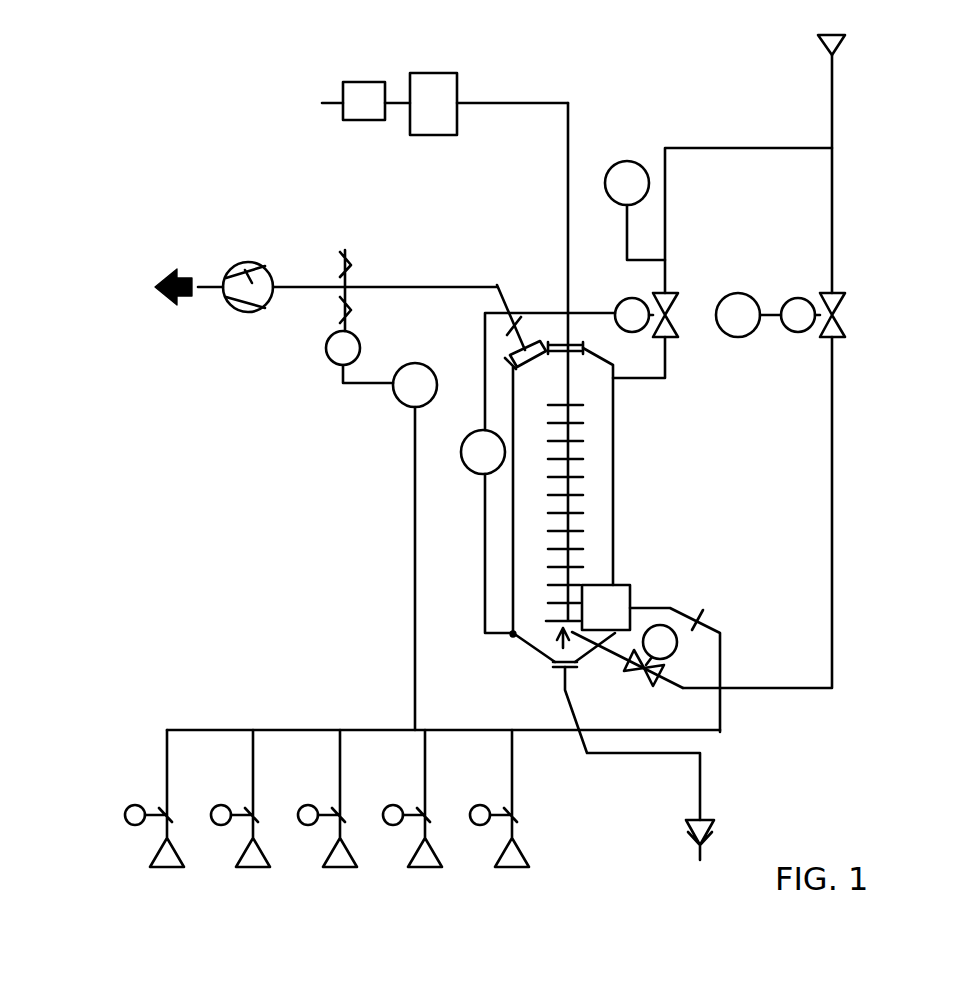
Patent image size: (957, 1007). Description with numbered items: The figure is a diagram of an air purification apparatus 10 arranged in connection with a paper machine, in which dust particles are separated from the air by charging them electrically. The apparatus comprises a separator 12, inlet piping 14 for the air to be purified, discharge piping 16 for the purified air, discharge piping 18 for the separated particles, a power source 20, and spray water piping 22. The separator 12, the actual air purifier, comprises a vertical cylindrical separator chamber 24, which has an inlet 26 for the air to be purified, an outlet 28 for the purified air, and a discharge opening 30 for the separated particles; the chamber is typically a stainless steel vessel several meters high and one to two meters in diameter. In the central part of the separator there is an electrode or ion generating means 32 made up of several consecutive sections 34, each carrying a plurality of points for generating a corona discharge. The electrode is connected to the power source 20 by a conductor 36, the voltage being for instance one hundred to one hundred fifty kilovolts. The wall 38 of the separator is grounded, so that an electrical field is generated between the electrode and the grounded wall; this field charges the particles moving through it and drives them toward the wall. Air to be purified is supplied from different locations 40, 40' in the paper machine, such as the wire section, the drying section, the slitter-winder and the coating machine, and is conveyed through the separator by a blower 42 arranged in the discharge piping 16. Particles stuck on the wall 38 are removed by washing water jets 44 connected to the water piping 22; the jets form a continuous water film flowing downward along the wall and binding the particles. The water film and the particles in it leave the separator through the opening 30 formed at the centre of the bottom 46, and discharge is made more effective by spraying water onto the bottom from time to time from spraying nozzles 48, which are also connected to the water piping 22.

The air purification apparatus 10 is at (500, 240).
The separator 12 is at (632, 487).
The inlet piping 14 is at (723, 667).
The discharge piping for purified air 16 is at (387, 287).
The discharge piping for separated particles 18 is at (648, 755).
The power source 20 is at (460, 82).
The spray water piping 22 is at (833, 417).
The separator chamber 24 is at (608, 498).
The inlet 26 is at (622, 603).
The outlet 28 is at (518, 352).
The discharge opening 30 is at (560, 666).
The electrode 32 is at (587, 540).
The sections 34 is at (552, 532).
The conductor 36 is at (572, 118).
The wall 38 is at (512, 500).
The location 40 is at (422, 818).
The location 40' is at (456, 818).
The blower 42 is at (250, 278).
The washing water jets 44 is at (607, 378).
The bottom 46 is at (523, 643).
The spraying nozzles 48 is at (571, 632).